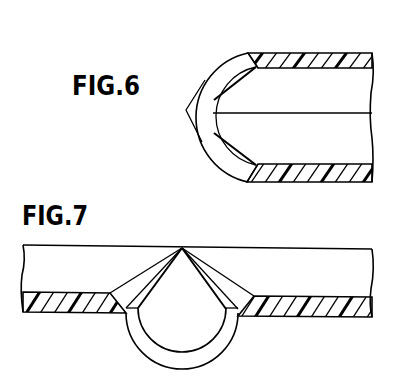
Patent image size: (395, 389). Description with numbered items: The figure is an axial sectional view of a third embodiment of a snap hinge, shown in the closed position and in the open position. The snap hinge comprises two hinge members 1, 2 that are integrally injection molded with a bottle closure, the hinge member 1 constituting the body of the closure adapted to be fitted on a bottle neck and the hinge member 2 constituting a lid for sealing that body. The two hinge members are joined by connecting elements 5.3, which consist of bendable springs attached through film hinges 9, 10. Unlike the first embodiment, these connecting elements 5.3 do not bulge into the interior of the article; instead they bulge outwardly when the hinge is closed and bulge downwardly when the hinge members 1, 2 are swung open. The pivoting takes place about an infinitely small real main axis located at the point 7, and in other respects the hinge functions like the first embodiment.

In FIG. 6, the hinge member 1 is at (333, 182).
In FIG. 7, the hinge member 1 is at (330, 317).
In FIG. 6, the hinge member 2 is at (340, 60).
In FIG. 7, the hinge member 2 is at (57, 305).
In FIG. 6, the connecting element 5.3 is at (217, 103).
In FIG. 7, the connecting element 5.3 is at (155, 320).
In FIG. 7, the point 7 is at (182, 248).
In FIG. 6, the film hinge 9 is at (247, 182).
In FIG. 6, the film hinge 10 is at (249, 53).